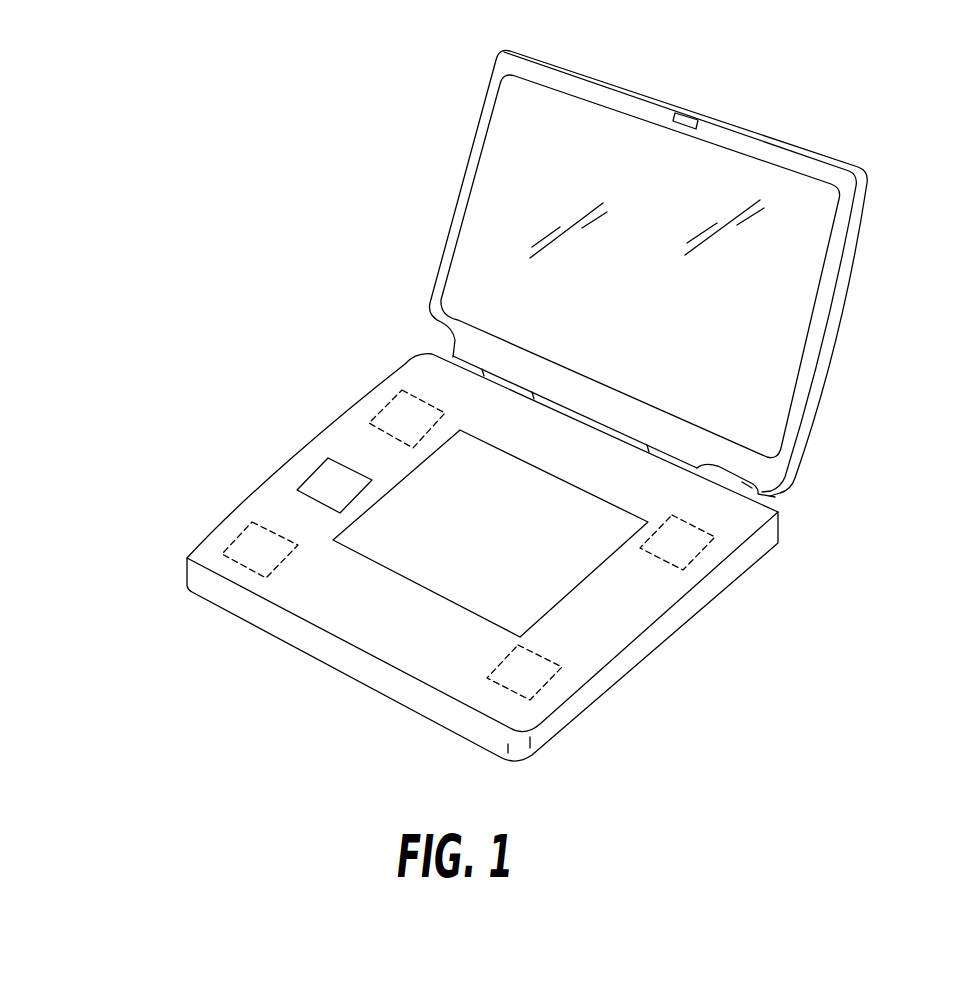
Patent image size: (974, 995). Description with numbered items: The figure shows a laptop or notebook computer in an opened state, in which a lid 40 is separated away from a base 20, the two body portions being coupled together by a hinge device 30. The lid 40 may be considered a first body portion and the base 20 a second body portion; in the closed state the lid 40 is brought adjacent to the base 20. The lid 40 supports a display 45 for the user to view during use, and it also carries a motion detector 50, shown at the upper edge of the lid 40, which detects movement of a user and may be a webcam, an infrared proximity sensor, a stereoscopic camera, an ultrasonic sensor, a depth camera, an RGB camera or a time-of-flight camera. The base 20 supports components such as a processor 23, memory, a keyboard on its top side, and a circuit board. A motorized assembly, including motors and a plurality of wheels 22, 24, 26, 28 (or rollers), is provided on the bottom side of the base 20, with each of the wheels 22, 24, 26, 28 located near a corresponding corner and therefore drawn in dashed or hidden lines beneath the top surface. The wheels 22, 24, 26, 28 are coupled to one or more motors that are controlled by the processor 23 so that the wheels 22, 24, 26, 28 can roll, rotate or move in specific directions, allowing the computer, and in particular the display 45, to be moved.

The base 20 is at (660, 613).
The wheel 22 is at (233, 541).
The processor 23 is at (337, 530).
The wheel 24 is at (310, 477).
The wheel 26 is at (380, 412).
The wheel 28 is at (705, 540).
The hinge device 30 is at (760, 490).
The lid 40 is at (852, 278).
The display 45 is at (800, 358).
The motion detector 50 is at (702, 125).